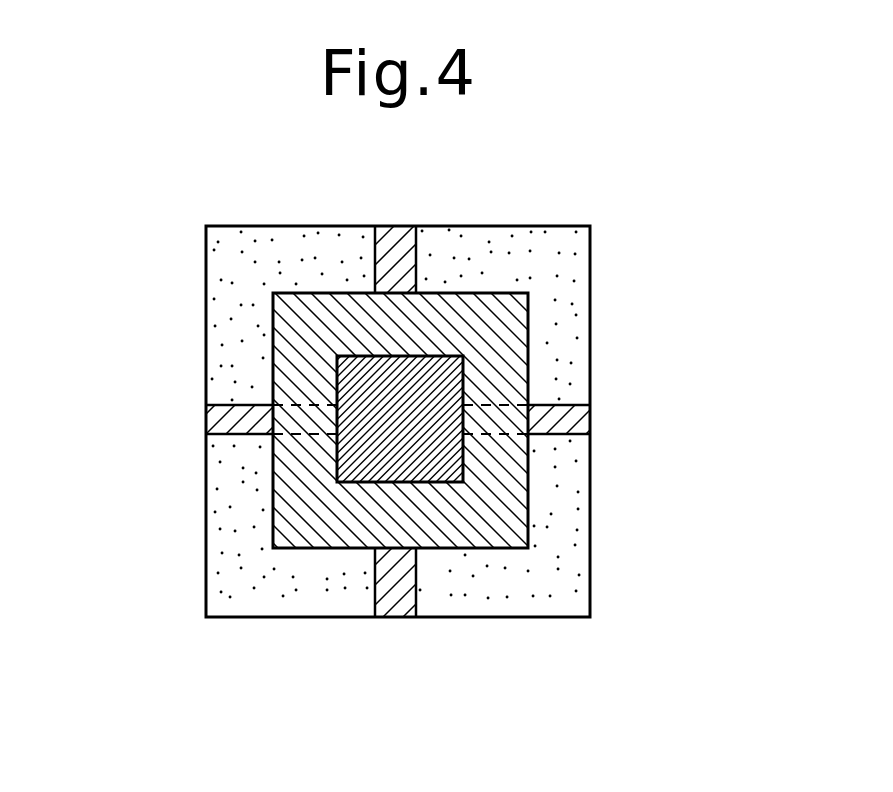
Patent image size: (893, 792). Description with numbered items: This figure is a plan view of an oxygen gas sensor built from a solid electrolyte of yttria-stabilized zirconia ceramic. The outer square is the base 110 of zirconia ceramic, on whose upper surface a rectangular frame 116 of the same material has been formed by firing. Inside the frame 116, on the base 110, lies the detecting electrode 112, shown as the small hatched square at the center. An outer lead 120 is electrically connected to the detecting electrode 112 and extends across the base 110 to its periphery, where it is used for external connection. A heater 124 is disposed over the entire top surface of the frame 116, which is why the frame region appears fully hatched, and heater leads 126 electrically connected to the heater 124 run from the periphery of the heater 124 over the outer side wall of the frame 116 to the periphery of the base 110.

The base 110 is at (550, 240).
The detecting electrode 112 is at (450, 387).
The rectangular frame 116 is at (272, 497).
The outer lead 120 is at (582, 415).
The heater 124 is at (305, 300).
The heater lead 126 is at (398, 607).